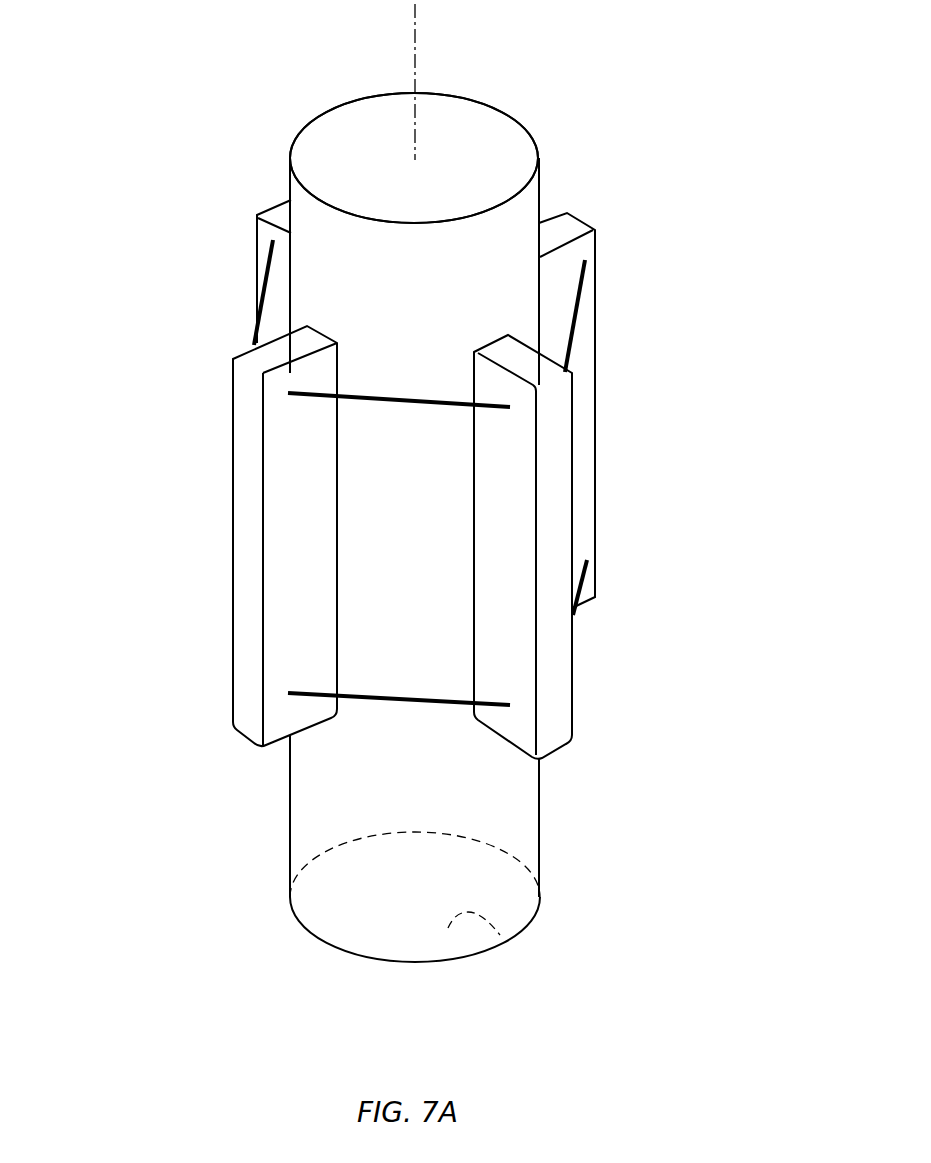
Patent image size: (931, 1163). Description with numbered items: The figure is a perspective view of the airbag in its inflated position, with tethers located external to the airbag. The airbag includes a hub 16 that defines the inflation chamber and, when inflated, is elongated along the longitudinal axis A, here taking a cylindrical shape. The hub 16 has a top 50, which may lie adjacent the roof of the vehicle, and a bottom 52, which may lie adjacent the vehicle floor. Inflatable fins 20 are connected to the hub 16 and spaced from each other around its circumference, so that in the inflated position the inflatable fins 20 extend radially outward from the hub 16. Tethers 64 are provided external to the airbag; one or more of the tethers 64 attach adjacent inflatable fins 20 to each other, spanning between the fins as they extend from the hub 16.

The longitudinal axis A is at (413, 42).
The hub 16 is at (541, 182).
The inflatable fins 20 is at (254, 218).
The top 50 is at (488, 135).
The bottom 52 is at (500, 935).
The tethers 64 is at (251, 334).